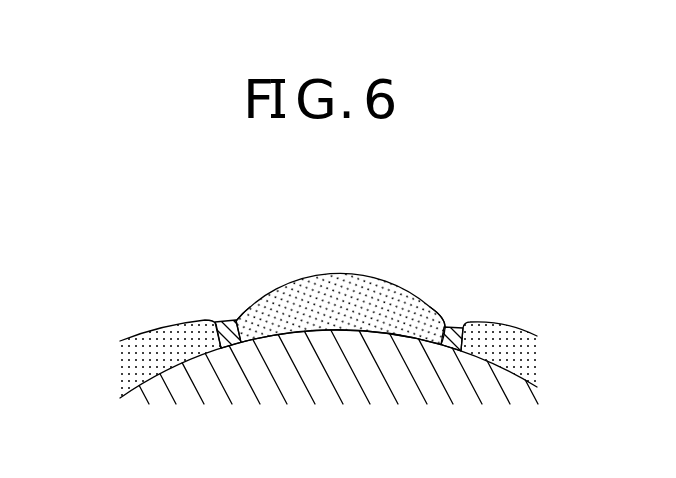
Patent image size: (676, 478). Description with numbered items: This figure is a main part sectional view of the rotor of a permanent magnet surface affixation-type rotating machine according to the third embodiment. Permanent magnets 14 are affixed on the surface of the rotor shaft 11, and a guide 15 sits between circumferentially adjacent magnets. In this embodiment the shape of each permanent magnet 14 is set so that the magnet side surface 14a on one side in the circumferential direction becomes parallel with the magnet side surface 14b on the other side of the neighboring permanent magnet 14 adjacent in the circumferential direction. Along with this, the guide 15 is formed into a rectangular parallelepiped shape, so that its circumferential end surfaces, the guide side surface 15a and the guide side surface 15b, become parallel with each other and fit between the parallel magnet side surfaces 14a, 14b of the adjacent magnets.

The rotor shaft 11 is at (195, 387).
The permanent magnet 14 is at (317, 282).
The magnet side surface 14a is at (236, 310).
The magnet side surface 14b is at (225, 323).
The guide 15 is at (455, 323).
The guide side surface 15a is at (442, 310).
The guide side surface 15b is at (482, 322).